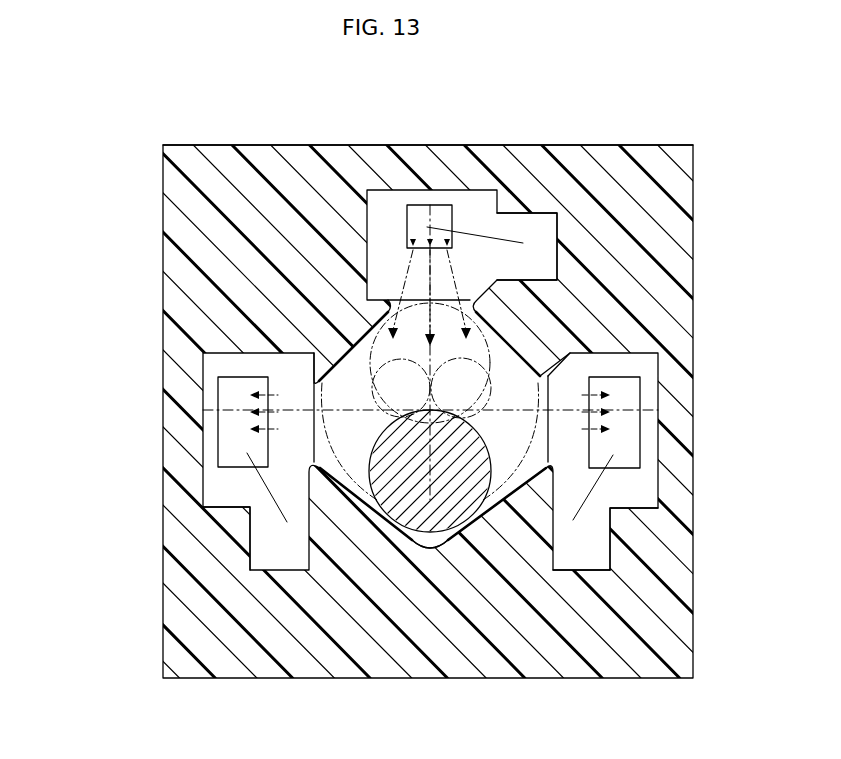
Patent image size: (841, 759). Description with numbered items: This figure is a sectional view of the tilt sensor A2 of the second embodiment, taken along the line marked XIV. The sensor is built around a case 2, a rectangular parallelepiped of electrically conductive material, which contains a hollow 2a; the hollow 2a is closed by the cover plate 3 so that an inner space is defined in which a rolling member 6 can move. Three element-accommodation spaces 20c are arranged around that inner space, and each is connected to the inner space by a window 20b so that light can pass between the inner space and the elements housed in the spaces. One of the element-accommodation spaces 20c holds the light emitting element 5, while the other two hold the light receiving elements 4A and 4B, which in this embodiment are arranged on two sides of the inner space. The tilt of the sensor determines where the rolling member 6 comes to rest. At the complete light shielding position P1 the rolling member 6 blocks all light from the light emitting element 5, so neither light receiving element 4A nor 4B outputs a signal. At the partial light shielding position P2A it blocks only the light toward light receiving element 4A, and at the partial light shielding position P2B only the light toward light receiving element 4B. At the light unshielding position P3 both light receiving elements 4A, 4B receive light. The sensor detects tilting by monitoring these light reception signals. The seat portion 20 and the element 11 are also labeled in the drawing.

The case 2 is at (693, 187).
The cover plate 3 is at (497, 358).
The valve seat 20 is at (358, 378).
The windows 20b is at (408, 332).
The element-accommodation spaces 20c is at (483, 213).
The light emitting element 5 is at (427, 207).
The light receiving element 4A is at (240, 437).
The light receiving element 4B is at (620, 447).
The rolling member 6 is at (468, 530).
The hollow 2a is at (447, 530).
The lower seat portion 11 is at (553, 535).
The complete light shielding position P1 is at (415, 536).
The partial light shielding position P2A is at (320, 380).
The partial light shielding position P2B is at (548, 400).
The light unshielding position P3 is at (372, 342).
The tilt sensor A2 is at (675, 140).
The section line XIV- XIV is at (78, 384).